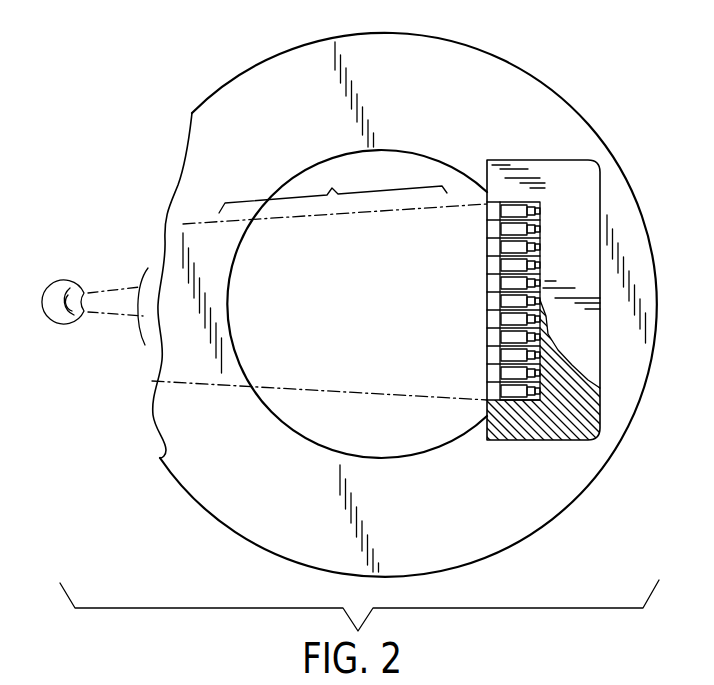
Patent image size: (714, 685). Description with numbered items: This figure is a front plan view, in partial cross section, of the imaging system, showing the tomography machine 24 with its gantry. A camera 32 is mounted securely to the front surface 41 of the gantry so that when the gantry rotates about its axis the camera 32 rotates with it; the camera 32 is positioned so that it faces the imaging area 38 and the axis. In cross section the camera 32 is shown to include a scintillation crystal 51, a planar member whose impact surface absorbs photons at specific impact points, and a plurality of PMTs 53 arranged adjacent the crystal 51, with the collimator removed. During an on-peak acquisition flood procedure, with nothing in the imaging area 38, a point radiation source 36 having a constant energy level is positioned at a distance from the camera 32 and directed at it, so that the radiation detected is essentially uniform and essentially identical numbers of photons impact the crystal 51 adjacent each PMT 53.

The tomography machine 24 is at (538, 59).
The camera 32 is at (552, 185).
The point radiation source 36 is at (48, 320).
The imaging area 38 is at (319, 280).
The front surface 41 is at (490, 540).
The scintillation crystal 51 is at (487, 202).
The PMTs 53 is at (543, 228).